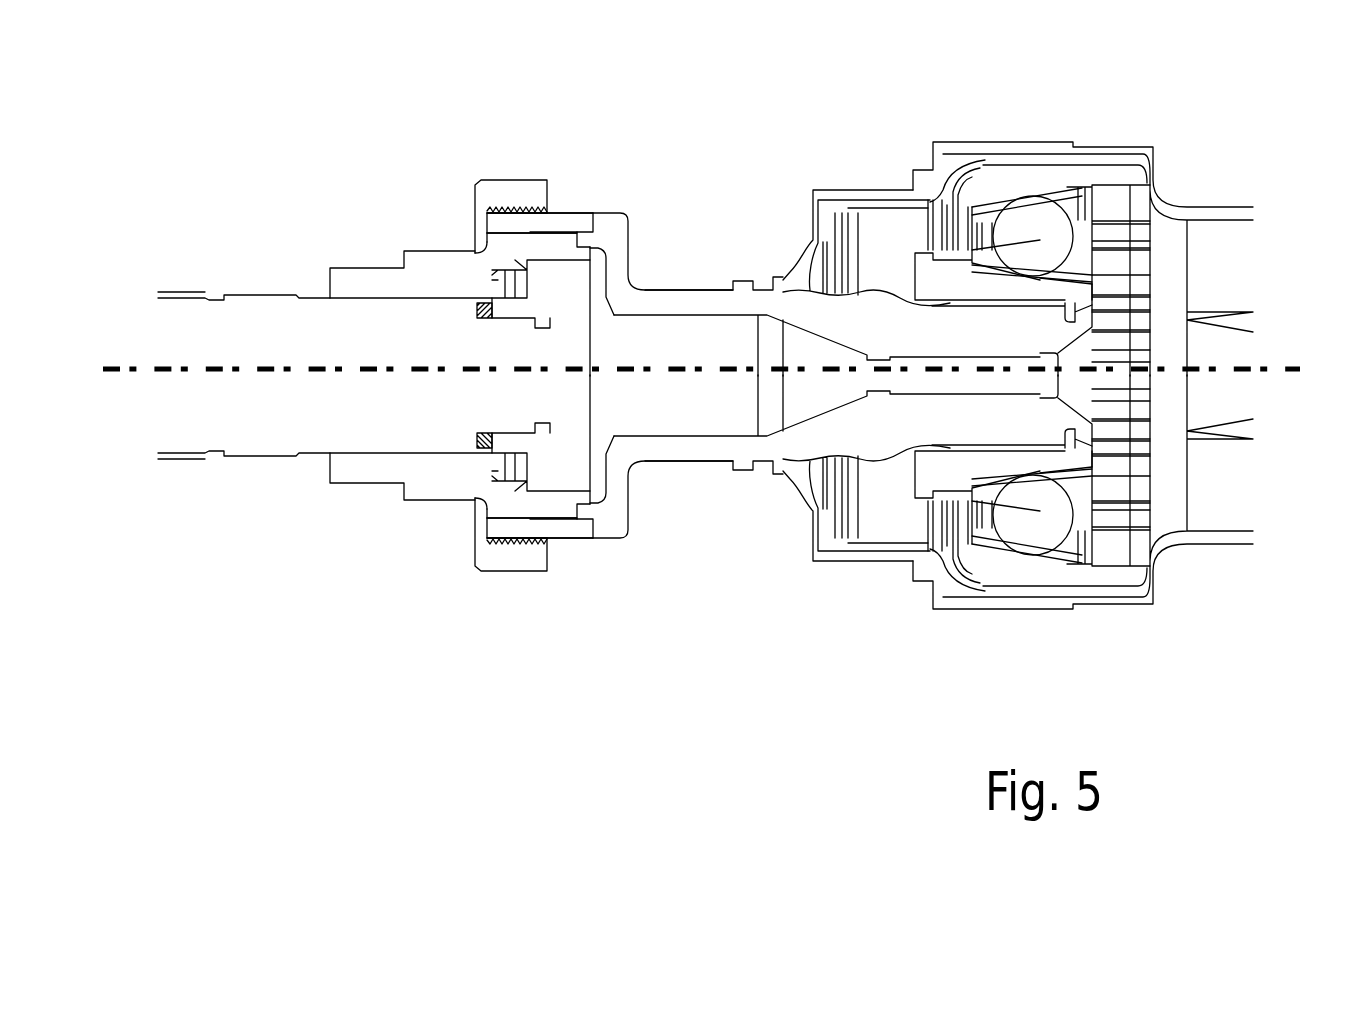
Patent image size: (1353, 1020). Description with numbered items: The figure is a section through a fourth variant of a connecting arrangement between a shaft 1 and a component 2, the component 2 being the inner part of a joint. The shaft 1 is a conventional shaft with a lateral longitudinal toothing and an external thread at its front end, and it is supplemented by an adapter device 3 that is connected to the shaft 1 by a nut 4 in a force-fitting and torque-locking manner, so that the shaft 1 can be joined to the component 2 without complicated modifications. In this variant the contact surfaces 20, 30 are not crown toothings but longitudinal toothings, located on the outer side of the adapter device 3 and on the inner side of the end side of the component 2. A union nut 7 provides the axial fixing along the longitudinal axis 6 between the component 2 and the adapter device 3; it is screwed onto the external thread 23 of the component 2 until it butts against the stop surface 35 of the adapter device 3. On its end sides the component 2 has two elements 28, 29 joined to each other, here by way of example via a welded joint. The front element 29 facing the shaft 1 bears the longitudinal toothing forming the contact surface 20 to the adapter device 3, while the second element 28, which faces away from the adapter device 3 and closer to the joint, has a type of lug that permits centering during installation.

The shaft 1 is at (312, 440).
The component 2 is at (682, 457).
The adapter device 3 is at (385, 467).
The nut 4 is at (488, 457).
The longitudinal axis 6 is at (165, 368).
The union nut 7 is at (477, 522).
The contact surface 20 is at (508, 230).
The external thread 23 is at (510, 210).
The second element 28 is at (615, 518).
The front element 29 is at (527, 532).
The contact surface 30 is at (550, 228).
The stop surface 35 is at (488, 238).